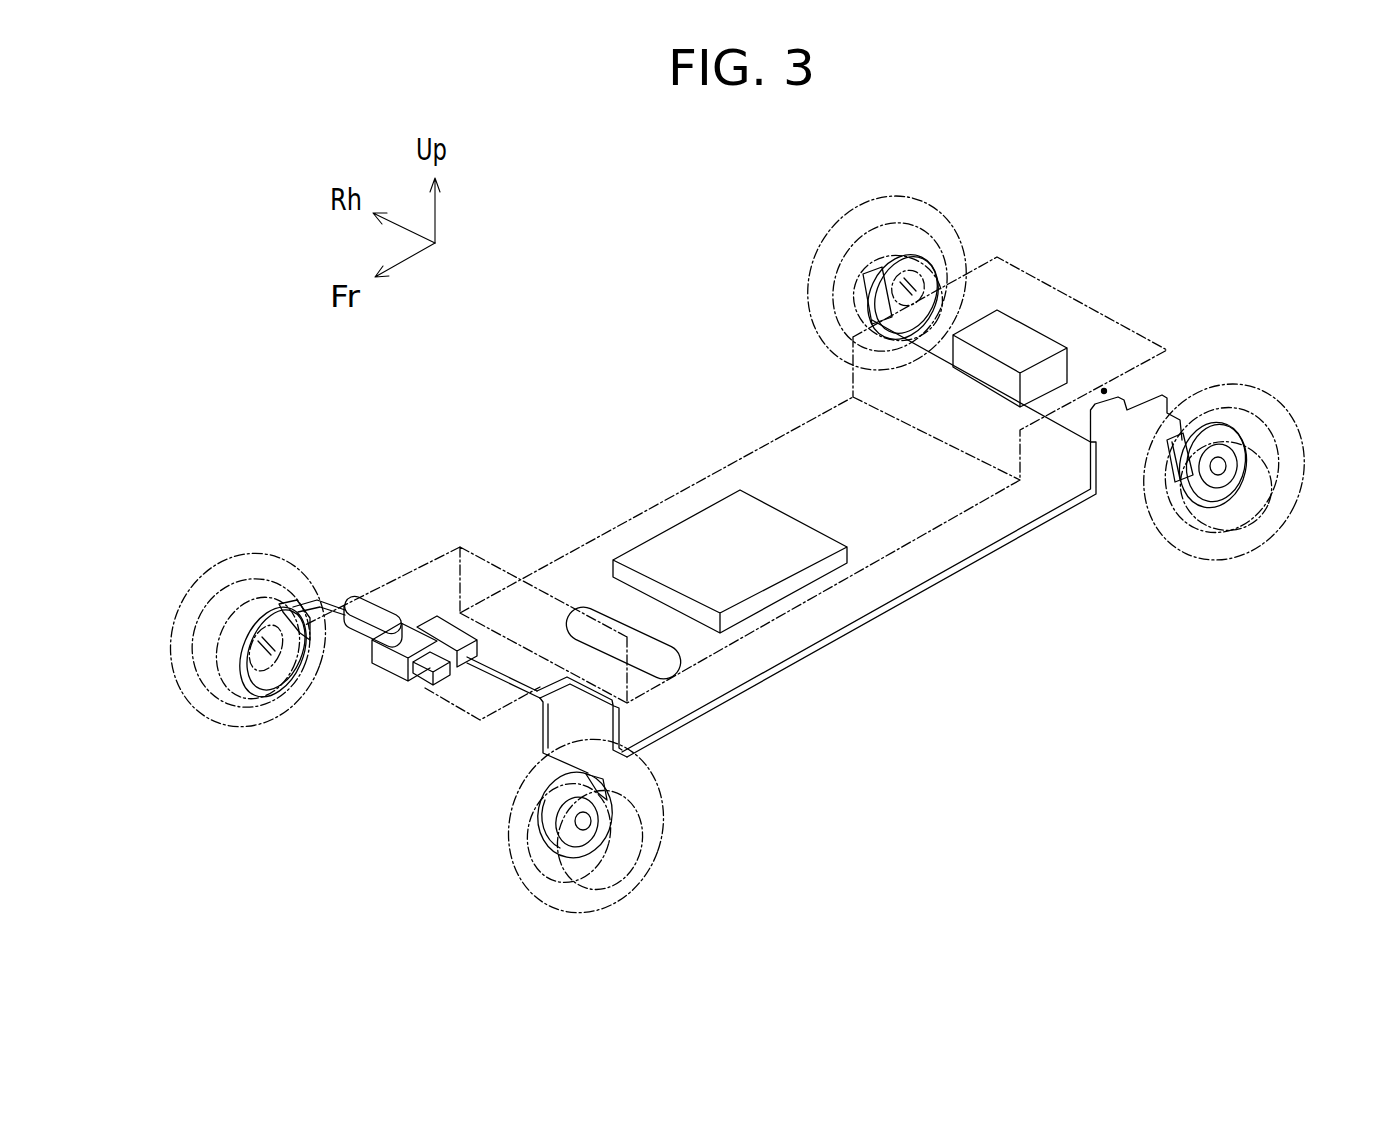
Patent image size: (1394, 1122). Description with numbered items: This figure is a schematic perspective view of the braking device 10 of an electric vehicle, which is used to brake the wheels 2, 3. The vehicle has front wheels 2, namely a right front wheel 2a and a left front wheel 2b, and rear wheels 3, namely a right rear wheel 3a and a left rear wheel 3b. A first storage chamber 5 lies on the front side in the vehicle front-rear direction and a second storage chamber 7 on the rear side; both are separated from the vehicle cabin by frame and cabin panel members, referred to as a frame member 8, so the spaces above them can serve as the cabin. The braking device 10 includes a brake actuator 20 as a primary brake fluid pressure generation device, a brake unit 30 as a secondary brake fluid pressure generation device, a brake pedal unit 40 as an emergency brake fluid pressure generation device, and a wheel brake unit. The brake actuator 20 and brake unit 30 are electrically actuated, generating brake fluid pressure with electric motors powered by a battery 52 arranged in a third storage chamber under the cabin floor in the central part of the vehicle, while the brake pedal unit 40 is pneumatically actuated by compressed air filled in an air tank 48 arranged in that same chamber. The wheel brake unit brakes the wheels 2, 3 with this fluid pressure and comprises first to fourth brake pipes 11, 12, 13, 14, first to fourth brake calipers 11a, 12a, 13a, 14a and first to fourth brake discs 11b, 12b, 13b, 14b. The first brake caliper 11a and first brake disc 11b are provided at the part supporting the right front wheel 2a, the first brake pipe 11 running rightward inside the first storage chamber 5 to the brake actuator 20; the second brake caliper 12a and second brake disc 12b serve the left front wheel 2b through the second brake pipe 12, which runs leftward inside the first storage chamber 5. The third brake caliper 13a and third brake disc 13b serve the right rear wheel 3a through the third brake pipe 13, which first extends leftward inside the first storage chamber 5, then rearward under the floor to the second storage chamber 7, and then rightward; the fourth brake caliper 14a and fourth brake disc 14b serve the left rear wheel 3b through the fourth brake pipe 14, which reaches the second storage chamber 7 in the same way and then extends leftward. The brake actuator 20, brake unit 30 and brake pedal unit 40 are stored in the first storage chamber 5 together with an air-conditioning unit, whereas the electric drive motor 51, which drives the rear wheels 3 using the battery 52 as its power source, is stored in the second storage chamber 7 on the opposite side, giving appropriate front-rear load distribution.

The front wheels 2 is at (383, 746).
The right front wheel 2a is at (172, 660).
The left front wheel 2b is at (508, 845).
The rear wheels 3 is at (1086, 364).
The right rear wheel 3a is at (963, 247).
The left rear wheel 3b is at (1303, 437).
The first storage chamber 5 is at (503, 730).
The second storage chamber 7 is at (1108, 392).
The frame member 8 is at (943, 533).
The braking device 10 is at (421, 642).
The first brake pipe 11 is at (346, 598).
The first brake caliper 11a is at (295, 605).
The first brake disc 11b is at (260, 680).
The second brake pipe 12 is at (545, 717).
The second brake caliper 12a is at (615, 797).
The second brake disc 12b is at (580, 850).
The third brake pipe 13 is at (963, 327).
The third brake caliper 13a is at (863, 274).
The third brake disc 13b is at (930, 258).
The fourth brake pipe 14 is at (1127, 410).
The fourth brake caliper 14a is at (1168, 484).
The fourth brake disc 14b is at (1222, 492).
The brake actuator 20 is at (445, 620).
The brake unit 30 is at (380, 657).
The brake pedal unit 40 is at (423, 675).
The air tank 48 is at (667, 666).
The electric drive motor 51 is at (1027, 345).
The battery 52 is at (707, 540).